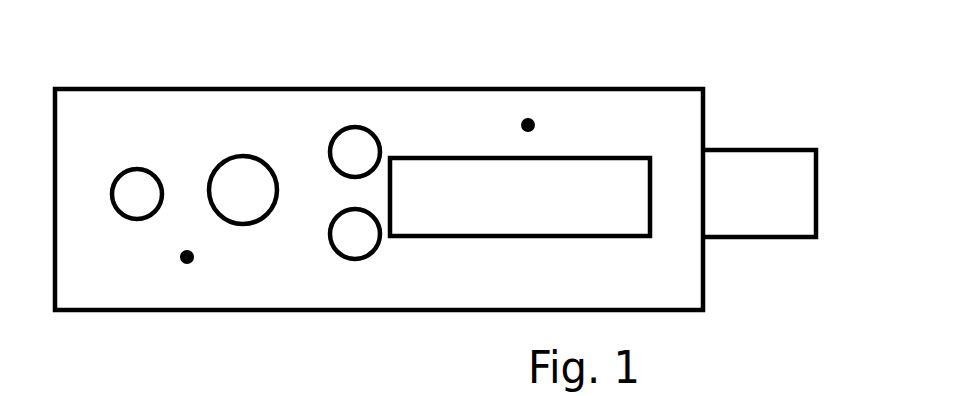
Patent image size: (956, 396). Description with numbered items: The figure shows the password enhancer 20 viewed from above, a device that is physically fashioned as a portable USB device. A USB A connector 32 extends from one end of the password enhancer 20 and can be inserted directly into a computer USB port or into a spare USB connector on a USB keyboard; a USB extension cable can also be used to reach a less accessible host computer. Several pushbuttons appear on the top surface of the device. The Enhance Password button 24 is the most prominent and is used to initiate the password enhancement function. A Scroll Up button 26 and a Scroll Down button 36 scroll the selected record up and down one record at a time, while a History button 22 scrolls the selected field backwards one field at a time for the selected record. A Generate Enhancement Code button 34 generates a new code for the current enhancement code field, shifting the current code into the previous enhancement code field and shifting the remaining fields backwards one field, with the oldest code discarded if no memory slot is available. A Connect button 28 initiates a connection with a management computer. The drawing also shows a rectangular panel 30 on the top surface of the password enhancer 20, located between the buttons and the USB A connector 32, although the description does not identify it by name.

The password enhancer 20 is at (292, 73).
The History button 22 is at (138, 188).
The Enhance Password button 24 is at (247, 173).
The Scroll Up button 26 is at (360, 150).
The Connect button 28 is at (535, 118).
The display / logo area 30 is at (595, 182).
The USB A connector 32 is at (767, 172).
The Generate Enhancement Code button 34 is at (180, 260).
The Scroll Down button 36 is at (342, 242).